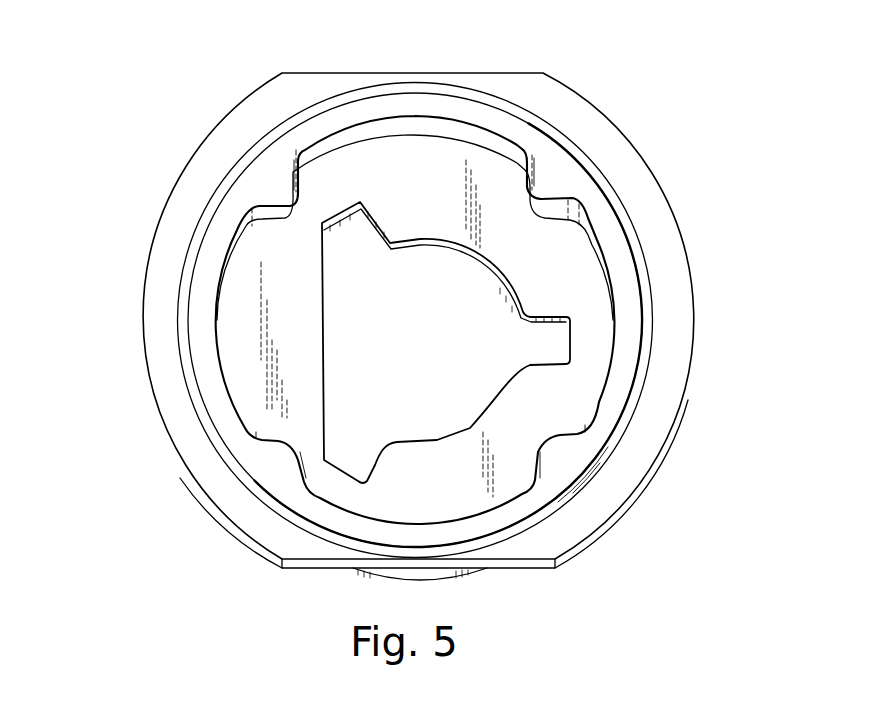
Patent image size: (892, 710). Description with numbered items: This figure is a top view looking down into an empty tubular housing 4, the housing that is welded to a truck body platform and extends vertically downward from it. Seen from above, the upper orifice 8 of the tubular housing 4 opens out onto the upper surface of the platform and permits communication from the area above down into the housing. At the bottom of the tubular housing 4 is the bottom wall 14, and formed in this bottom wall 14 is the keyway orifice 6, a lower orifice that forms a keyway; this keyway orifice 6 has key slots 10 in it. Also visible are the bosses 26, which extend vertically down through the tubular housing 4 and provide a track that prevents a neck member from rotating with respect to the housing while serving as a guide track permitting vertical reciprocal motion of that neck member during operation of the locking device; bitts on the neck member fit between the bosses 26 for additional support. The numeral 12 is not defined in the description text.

The tubular housing 4 is at (393, 573).
The keyway orifice 6 is at (367, 389).
The upper orifice 8 is at (344, 123).
The key slots 10 is at (357, 240).
The annular ring 12 is at (380, 133).
The bottom wall 14 is at (437, 178).
The boss 26 is at (278, 170).